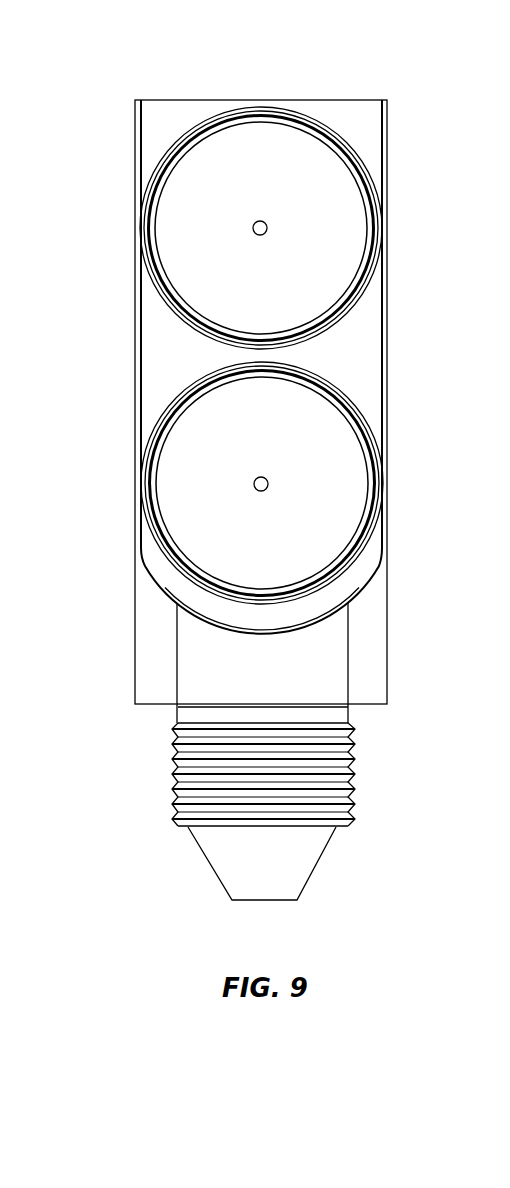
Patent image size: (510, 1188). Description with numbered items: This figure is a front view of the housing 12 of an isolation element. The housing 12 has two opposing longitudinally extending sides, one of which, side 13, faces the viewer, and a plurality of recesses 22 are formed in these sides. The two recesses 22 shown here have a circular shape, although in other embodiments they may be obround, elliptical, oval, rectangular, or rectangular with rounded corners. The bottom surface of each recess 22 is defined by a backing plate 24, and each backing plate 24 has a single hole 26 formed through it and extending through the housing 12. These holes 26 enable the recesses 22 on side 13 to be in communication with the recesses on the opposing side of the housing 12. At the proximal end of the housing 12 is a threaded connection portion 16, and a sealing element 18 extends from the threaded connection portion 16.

The housing 12 is at (111, 361).
The longitudinally extending side 13 is at (358, 117).
The threaded connection portion 16 is at (203, 759).
The sealing element 18 is at (320, 860).
The recess 22 is at (335, 257).
The backing plate 24 is at (236, 188).
The hole 26 is at (262, 222).